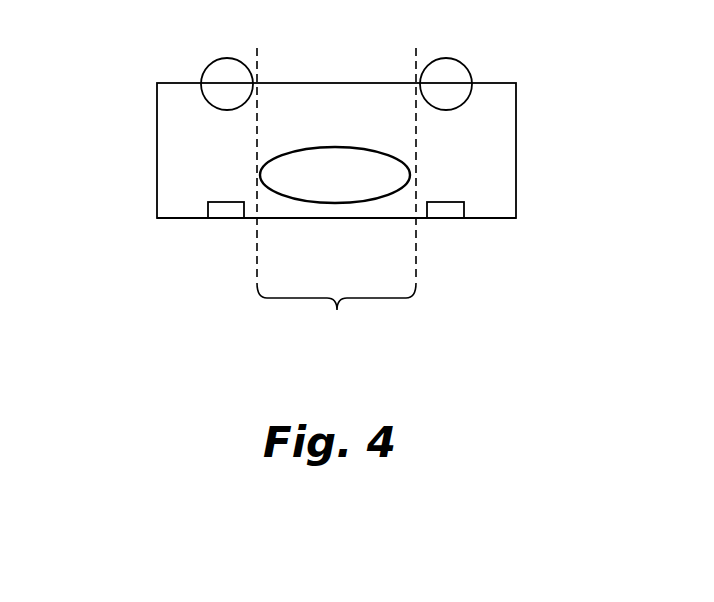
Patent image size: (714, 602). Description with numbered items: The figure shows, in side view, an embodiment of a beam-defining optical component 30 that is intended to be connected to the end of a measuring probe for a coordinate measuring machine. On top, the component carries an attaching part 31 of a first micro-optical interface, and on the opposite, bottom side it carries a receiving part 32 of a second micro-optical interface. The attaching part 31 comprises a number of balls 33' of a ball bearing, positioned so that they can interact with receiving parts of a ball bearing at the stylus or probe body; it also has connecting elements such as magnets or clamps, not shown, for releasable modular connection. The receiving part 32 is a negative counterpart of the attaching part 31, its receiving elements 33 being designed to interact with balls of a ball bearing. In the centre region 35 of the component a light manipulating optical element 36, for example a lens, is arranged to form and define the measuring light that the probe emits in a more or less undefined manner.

The beam-defining optical component 30 is at (279, 116).
The attaching part 31 is at (336, 146).
The receiving part 32 is at (333, 253).
The receiving elements 33 is at (389, 231).
The balls 33' is at (390, 69).
The centre region 35 is at (336, 313).
The light manipulating optical element 36 is at (244, 170).